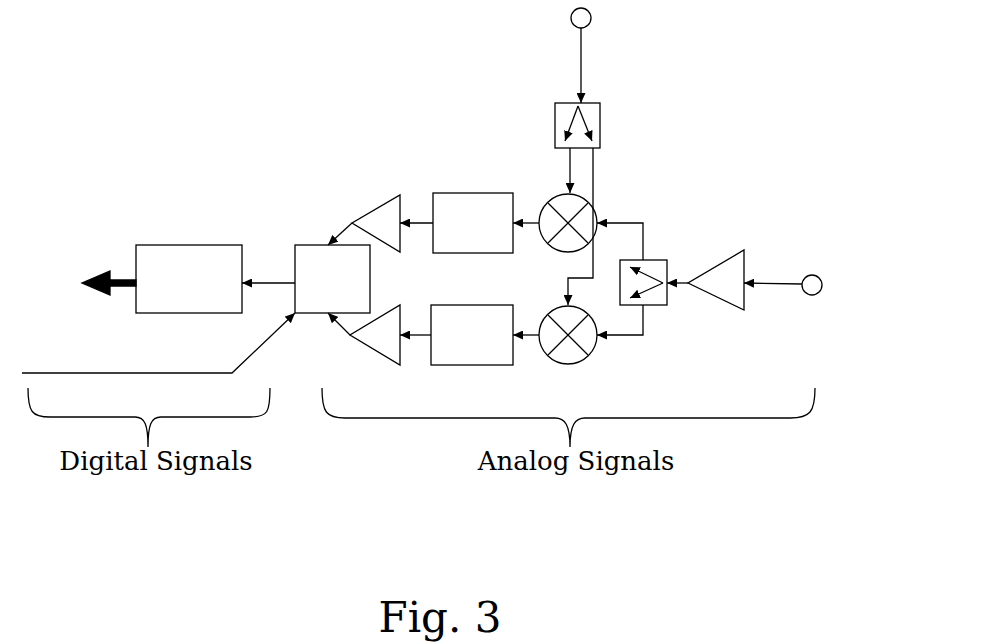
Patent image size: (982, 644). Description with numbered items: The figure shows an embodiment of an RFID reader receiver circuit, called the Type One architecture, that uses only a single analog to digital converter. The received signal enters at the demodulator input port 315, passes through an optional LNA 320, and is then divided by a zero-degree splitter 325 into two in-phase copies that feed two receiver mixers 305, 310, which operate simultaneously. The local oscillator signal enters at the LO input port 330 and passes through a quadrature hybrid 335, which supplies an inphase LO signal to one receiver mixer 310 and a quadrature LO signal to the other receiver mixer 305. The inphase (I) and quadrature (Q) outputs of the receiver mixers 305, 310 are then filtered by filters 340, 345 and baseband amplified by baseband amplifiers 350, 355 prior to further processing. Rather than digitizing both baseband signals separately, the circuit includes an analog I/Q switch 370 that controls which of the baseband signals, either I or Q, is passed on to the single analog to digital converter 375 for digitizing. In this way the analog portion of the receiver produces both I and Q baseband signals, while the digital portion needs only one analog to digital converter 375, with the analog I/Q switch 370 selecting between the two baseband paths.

The receiver mixer 305 is at (568, 364).
The receiver mixer 310 is at (598, 207).
The demodulator input port 315 is at (812, 295).
The LNA 320 is at (722, 262).
The 0-degree splitter 325 is at (663, 306).
The LO input port 330 is at (591, 23).
The quadrature hybrid 335 is at (600, 135).
The filter 340 is at (453, 193).
The filter 345 is at (467, 365).
The baseband amplifier 350 is at (374, 210).
The baseband amplifier 355 is at (380, 365).
The analog I/Q switch 370 is at (311, 315).
The analog to digital converter 375 is at (172, 245).